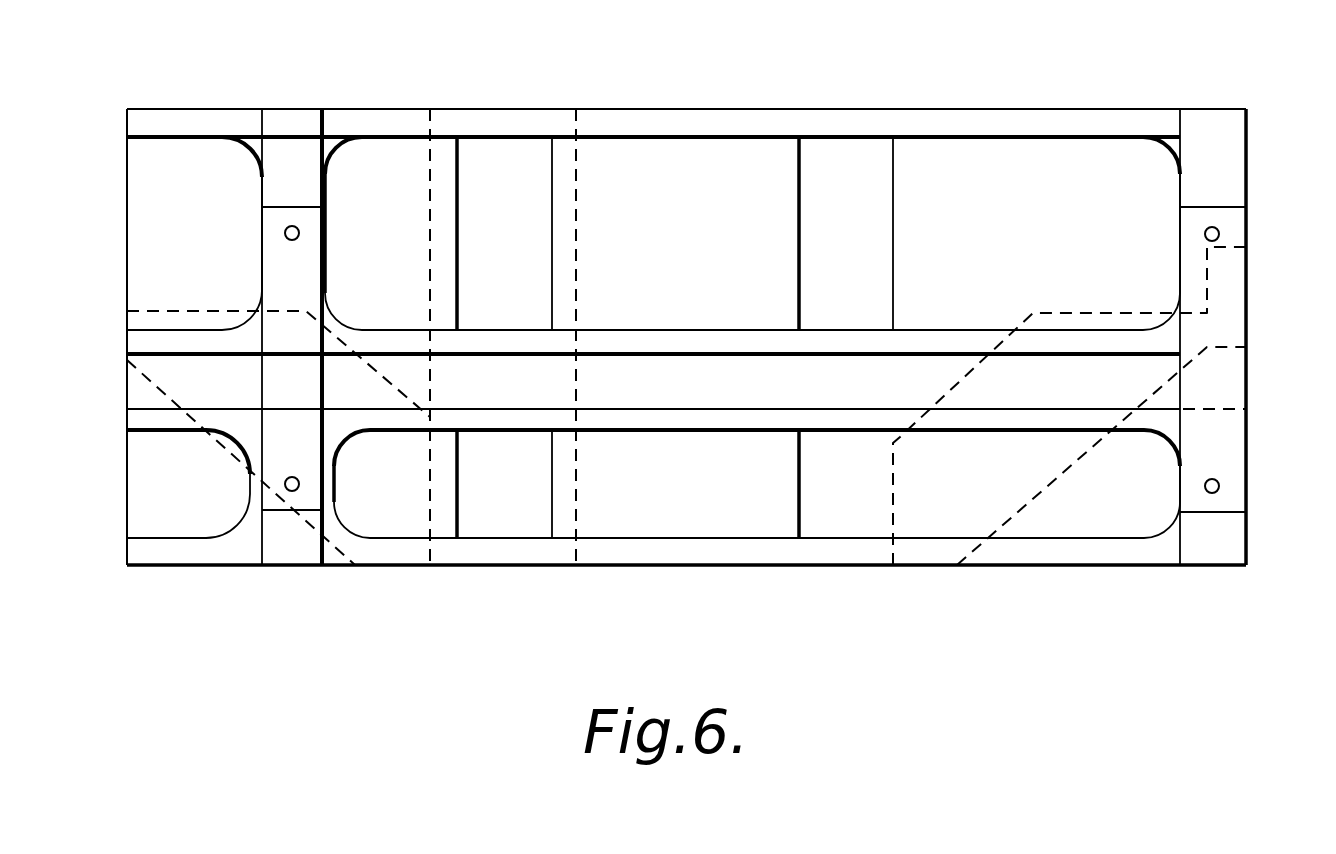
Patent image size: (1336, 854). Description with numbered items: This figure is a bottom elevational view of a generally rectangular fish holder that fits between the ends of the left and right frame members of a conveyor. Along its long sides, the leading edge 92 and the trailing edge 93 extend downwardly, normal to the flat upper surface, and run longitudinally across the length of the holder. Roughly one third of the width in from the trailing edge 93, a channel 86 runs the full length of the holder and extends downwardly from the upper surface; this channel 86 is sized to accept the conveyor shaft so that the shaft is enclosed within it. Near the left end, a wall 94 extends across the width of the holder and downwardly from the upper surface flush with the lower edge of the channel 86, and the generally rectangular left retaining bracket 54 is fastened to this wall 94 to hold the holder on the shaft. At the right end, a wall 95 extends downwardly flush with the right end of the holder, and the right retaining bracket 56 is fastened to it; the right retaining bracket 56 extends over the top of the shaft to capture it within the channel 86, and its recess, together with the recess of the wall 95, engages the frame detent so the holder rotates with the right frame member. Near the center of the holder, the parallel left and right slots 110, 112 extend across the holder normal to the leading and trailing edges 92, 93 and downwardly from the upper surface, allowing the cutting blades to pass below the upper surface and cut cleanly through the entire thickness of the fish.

The left retaining bracket 54 is at (287, 438).
The right retaining bracket 56 is at (1217, 447).
The channel 86 is at (683, 382).
The leading edge 92 is at (365, 124).
The trailing edge 93 is at (683, 548).
The wall 94 is at (292, 545).
The wall 95 is at (1233, 160).
The left slot 110 is at (507, 167).
The right slot 112 is at (847, 167).